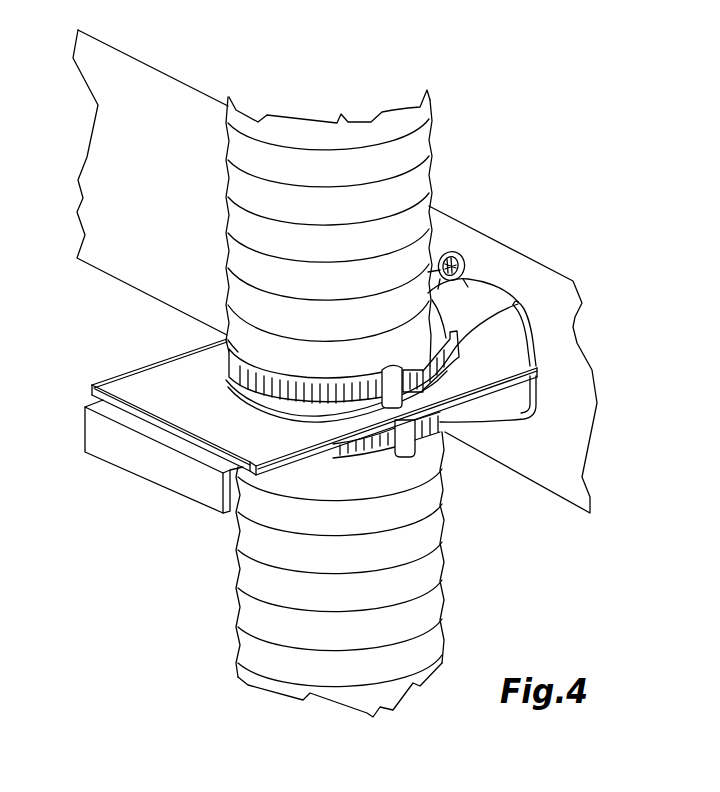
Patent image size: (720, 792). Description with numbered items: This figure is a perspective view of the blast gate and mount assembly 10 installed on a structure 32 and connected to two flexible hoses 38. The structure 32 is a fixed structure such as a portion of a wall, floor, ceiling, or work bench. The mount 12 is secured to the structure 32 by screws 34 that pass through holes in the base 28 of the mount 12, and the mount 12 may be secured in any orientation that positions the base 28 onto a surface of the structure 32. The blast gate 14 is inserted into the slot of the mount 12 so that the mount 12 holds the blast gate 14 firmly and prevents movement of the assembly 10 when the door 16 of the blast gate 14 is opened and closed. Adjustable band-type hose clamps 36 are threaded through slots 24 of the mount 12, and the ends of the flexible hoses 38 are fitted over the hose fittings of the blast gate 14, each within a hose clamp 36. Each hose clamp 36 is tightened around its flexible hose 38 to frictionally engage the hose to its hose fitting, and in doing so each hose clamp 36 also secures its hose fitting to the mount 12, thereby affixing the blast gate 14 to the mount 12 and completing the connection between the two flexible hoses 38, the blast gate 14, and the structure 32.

The blast gate and mount assembly 10 is at (274, 431).
The mount 12 is at (424, 348).
The blast gate 14 is at (157, 388).
The door 16 is at (190, 480).
The slots 24 is at (521, 305).
The base 28 is at (537, 347).
The structure 32 is at (133, 78).
The screws 34 is at (447, 252).
The hose clamps 36 is at (232, 376).
The flexible hoses 38 is at (415, 140).